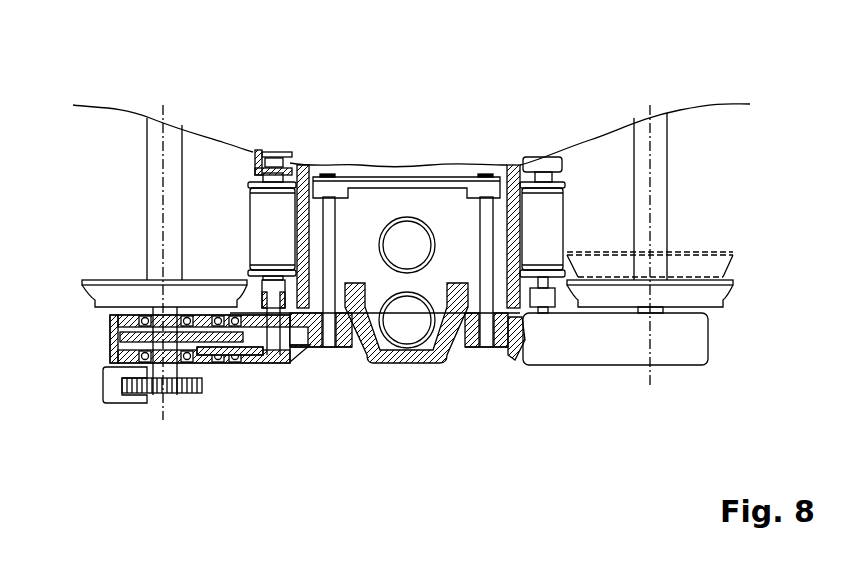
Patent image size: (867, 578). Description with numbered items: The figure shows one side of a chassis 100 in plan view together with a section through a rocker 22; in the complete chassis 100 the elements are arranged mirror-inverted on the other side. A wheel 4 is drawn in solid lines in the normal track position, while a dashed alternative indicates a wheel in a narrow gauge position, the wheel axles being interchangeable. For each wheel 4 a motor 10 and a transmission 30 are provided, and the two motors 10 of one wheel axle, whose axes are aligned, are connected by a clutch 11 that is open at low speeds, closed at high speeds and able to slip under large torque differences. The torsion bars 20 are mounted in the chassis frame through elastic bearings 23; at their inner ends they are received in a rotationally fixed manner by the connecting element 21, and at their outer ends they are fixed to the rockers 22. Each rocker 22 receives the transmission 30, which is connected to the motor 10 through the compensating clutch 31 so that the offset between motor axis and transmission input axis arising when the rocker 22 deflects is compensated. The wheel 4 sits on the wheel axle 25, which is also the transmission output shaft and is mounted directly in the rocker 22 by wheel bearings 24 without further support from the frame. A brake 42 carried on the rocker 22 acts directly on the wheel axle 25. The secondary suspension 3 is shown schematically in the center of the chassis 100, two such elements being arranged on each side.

The chassis 100 is at (100, 75).
The secondary suspension 3 is at (405, 357).
The wheel 4 is at (102, 298).
The motor 10 is at (267, 228).
The clutch 11 is at (255, 166).
The torsion bar 20 is at (328, 350).
The connecting element 21 is at (477, 185).
The rocker 22 is at (112, 337).
The elastic bearing 23 is at (513, 353).
The wheel bearing 24 is at (187, 365).
The wheel axle 25 is at (163, 405).
The transmission 30 is at (260, 357).
The compensating clutch 31 is at (290, 357).
The brake 42 is at (110, 397).